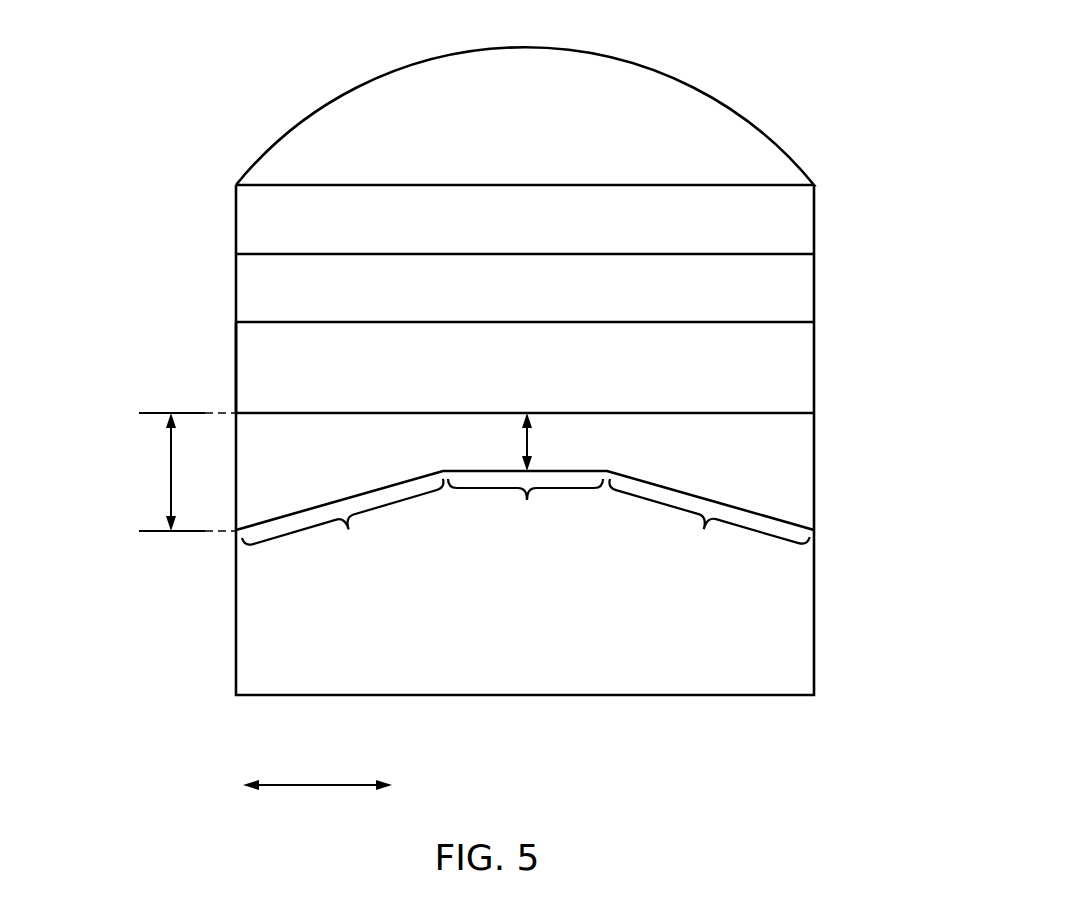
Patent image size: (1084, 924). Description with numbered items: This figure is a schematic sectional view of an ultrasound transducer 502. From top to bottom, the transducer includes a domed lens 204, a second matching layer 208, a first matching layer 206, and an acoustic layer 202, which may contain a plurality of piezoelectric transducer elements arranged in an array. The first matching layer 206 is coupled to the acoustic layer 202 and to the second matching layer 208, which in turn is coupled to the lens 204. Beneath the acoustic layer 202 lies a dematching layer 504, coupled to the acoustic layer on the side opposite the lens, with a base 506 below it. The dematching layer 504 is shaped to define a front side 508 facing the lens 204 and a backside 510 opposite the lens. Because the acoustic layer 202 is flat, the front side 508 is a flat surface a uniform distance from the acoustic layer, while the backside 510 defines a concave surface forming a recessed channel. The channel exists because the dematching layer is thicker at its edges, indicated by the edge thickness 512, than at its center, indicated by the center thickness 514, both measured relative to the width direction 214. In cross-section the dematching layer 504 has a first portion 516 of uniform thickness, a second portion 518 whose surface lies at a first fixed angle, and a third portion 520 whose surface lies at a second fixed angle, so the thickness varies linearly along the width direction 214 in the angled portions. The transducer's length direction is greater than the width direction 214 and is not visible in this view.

The ultrasound transducer 502 is at (802, 62).
The lens 204 is at (503, 134).
The second matching layer 208 is at (503, 232).
The first matching layer 206 is at (503, 299).
The acoustic layer 202 is at (503, 382).
The front side 508 is at (284, 408).
The dematching layer 504 is at (722, 467).
The base 506 is at (503, 637).
The backside 510 is at (399, 494).
The edge thickness 512 is at (170, 486).
The center thickness 514 is at (535, 438).
The first portion 516 is at (525, 503).
The second portion 518 is at (345, 521).
The third portion 520 is at (707, 521).
The width direction 214 is at (318, 783).